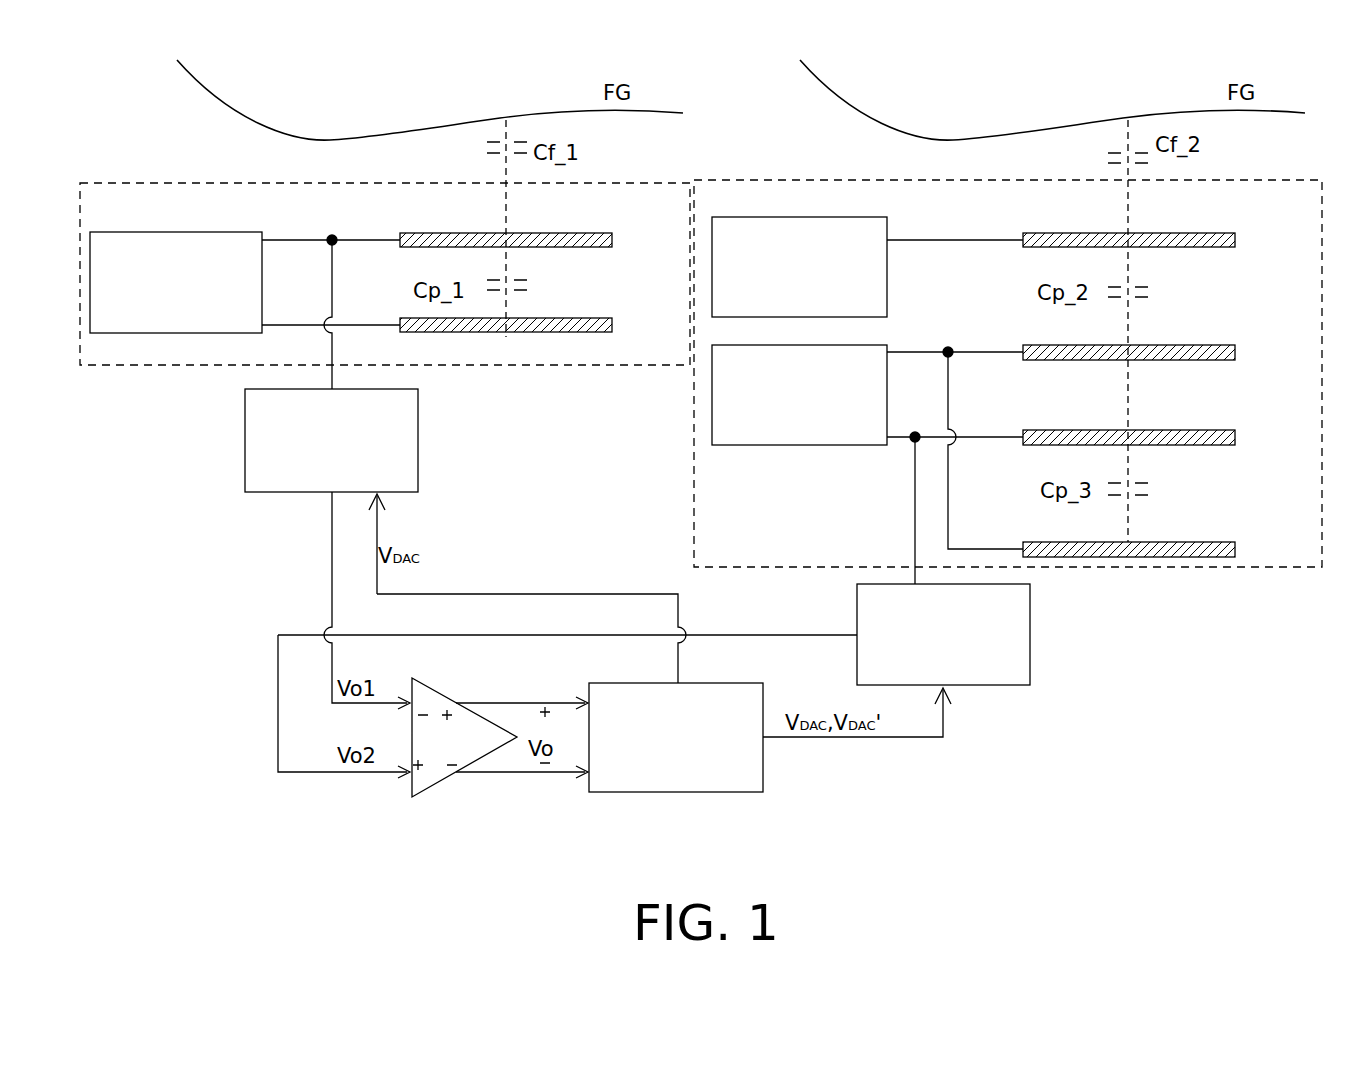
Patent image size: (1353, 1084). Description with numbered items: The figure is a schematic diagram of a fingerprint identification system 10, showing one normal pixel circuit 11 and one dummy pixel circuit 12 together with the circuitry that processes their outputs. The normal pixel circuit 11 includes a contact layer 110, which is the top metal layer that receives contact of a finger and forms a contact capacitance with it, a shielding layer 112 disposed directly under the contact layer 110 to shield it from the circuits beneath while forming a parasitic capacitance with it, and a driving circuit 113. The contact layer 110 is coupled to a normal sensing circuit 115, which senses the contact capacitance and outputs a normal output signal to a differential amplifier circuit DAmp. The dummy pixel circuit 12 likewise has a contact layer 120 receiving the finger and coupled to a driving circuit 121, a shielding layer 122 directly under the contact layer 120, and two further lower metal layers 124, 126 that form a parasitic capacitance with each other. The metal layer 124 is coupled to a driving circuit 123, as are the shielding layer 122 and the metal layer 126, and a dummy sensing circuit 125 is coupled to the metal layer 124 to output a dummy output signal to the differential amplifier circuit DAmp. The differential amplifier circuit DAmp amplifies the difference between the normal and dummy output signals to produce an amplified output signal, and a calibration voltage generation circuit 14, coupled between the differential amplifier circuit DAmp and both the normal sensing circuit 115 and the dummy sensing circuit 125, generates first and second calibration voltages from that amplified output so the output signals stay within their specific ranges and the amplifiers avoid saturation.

The fingerprint identification system 10 is at (206, 758).
The normal pixel circuit 11 is at (106, 183).
The dummy pixel circuit 12 is at (694, 470).
The calibration voltage generation circuit 14 is at (685, 793).
The contact layer 110 is at (576, 232).
The shielding layer 112 is at (576, 317).
The driving circuit 113 is at (173, 337).
The normal sensing circuit 115 is at (418, 441).
The contact layer 120 is at (1196, 232).
The driving circuit 121 is at (797, 216).
The shielding layer 122 is at (1196, 344).
The driving circuit 123 is at (800, 447).
The metal layer 124 is at (1196, 429).
The dummy sensing circuit 125 is at (1030, 633).
The metal layer 126 is at (1196, 541).
The differential amplifier circuit DAmp is at (435, 786).